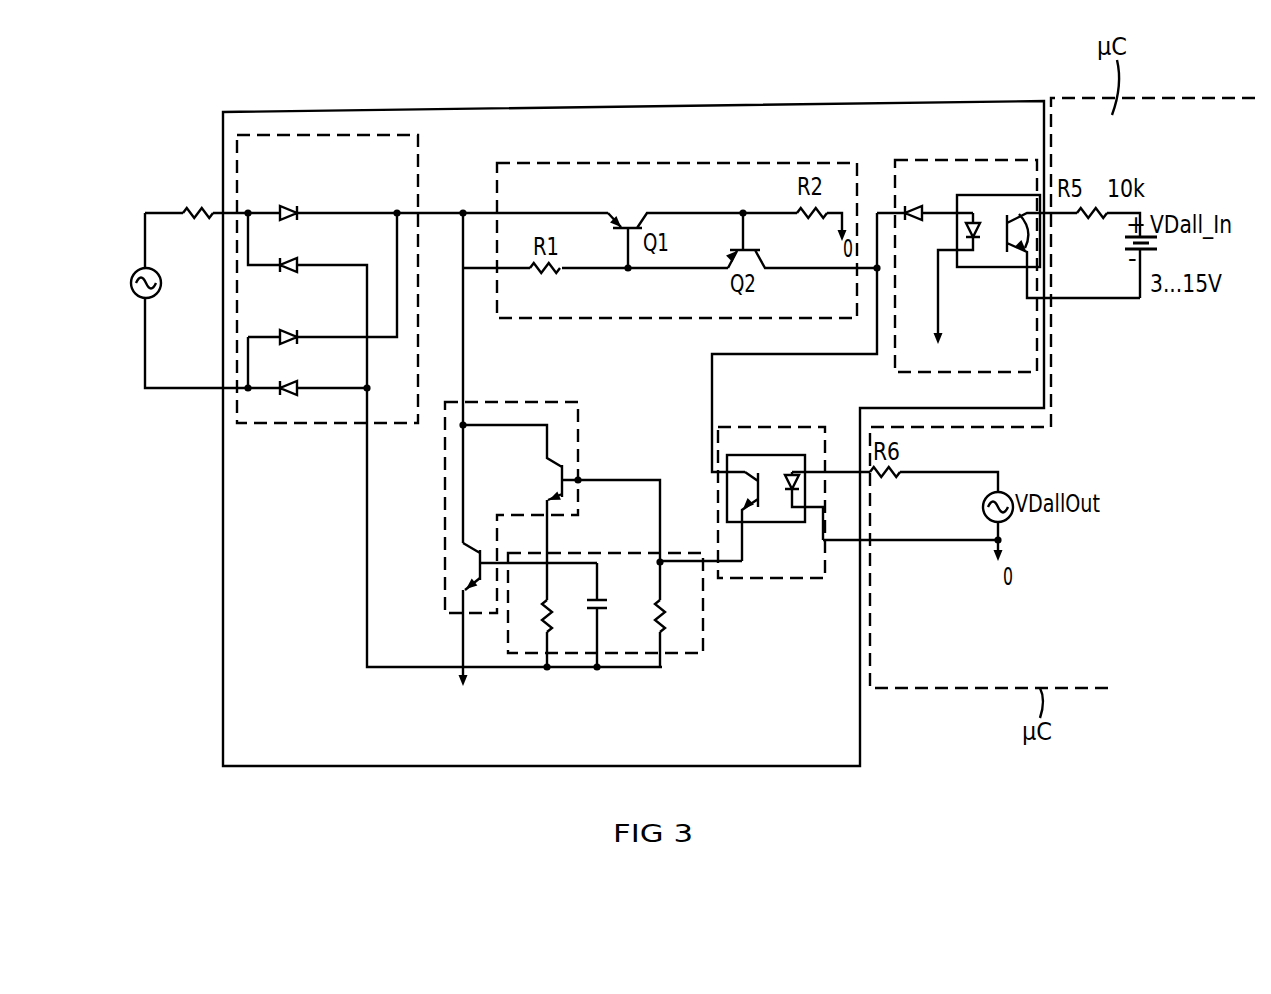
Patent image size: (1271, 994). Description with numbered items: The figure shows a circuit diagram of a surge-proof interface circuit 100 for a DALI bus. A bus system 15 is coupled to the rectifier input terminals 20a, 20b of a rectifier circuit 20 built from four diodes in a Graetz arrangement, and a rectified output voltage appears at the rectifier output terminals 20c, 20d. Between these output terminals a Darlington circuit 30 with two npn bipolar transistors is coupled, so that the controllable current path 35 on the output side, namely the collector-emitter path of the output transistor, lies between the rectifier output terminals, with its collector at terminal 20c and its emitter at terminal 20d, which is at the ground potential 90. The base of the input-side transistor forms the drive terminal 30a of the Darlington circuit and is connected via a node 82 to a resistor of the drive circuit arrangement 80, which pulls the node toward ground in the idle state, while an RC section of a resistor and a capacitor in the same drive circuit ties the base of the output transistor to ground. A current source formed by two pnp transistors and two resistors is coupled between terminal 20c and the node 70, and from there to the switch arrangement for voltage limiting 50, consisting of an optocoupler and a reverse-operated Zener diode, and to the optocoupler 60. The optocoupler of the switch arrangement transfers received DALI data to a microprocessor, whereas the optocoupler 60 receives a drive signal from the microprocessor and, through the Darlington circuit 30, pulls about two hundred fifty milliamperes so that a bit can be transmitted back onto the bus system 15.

The surge-proof interface circuit 100 is at (735, 96).
The bus system 15 is at (146, 208).
The rectifier circuit 20 is at (420, 200).
The rectifier input terminal 20a is at (249, 208).
The rectifier input terminal 20b is at (249, 394).
The rectifier output terminal 20c is at (397, 208).
The rectifier output terminal 20d is at (366, 393).
The Darlington circuit 30 is at (444, 613).
The drive terminal 30a is at (581, 477).
The controllable current path 35 is at (456, 567).
The switch arrangement for voltage limiting 50 is at (950, 160).
The optocoupler 60 is at (822, 580).
The node 70 is at (876, 262).
The drive circuit arrangement 80 is at (652, 655).
The node 82 is at (663, 558).
The ground potential 90 is at (841, 207).